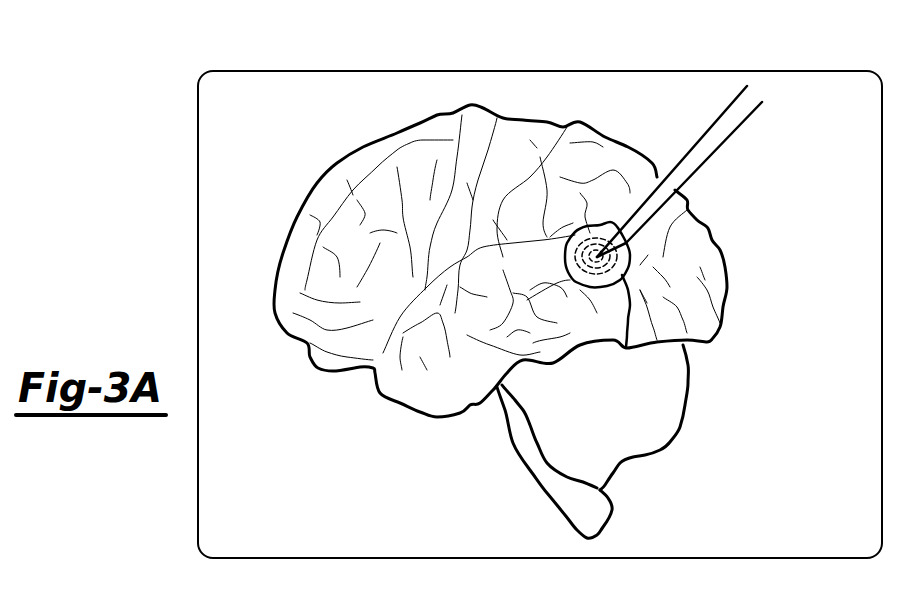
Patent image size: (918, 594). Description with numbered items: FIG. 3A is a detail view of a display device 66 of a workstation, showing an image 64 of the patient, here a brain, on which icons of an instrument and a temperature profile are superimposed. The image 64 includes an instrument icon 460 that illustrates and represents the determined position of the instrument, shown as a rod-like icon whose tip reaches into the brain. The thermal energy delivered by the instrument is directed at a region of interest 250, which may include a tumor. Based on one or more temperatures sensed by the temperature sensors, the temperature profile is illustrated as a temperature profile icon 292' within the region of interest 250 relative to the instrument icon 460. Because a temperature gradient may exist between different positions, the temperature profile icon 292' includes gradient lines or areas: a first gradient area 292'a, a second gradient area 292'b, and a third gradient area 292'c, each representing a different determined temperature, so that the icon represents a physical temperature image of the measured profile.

The display device 66 is at (445, 70).
The image 64 is at (330, 157).
The instrument icon 460 is at (730, 161).
The temperature profile icon 292' is at (607, 191).
The first gradient area 292'a is at (679, 242).
The second gradient area 292'b is at (702, 261).
The third gradient area 292'c is at (694, 289).
The region of interest 250 is at (626, 348).